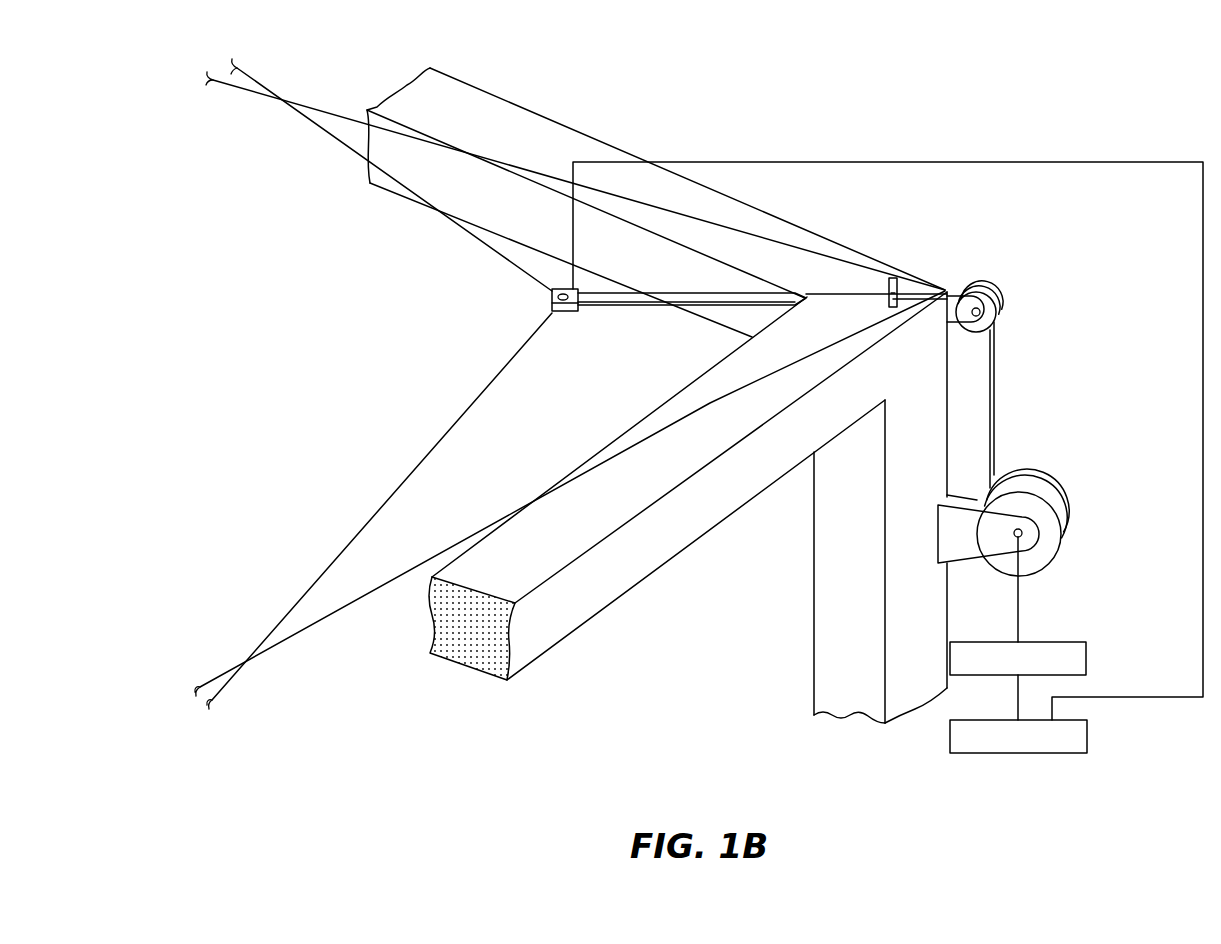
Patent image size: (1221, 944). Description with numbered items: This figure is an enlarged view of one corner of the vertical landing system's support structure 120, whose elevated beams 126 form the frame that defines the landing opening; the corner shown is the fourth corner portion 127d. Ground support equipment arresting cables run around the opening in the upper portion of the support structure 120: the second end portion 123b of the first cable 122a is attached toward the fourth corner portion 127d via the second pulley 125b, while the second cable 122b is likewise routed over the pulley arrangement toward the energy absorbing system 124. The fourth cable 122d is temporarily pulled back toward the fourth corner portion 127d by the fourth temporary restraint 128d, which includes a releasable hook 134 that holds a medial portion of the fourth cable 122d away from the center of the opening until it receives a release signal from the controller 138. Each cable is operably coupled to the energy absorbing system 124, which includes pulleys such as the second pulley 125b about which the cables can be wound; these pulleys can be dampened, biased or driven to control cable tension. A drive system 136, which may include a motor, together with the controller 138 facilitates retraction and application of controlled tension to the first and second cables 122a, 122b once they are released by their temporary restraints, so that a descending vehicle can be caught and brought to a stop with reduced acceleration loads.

The support structure 120 is at (833, 647).
The first cable 122a is at (322, 622).
The second cable 122b is at (343, 115).
The fourth cable 122d is at (533, 335).
The second end portion 123b is at (716, 382).
The energy absorbing system 124 is at (1094, 466).
The second pulley 125b is at (1060, 548).
The elevated beams 126 is at (518, 127).
The fourth corner portion 127d is at (842, 247).
The fourth temporary restraint 128d is at (655, 293).
The releasable hook 134 is at (569, 313).
The drive system 136 is at (1087, 660).
The controller 138 is at (1087, 740).